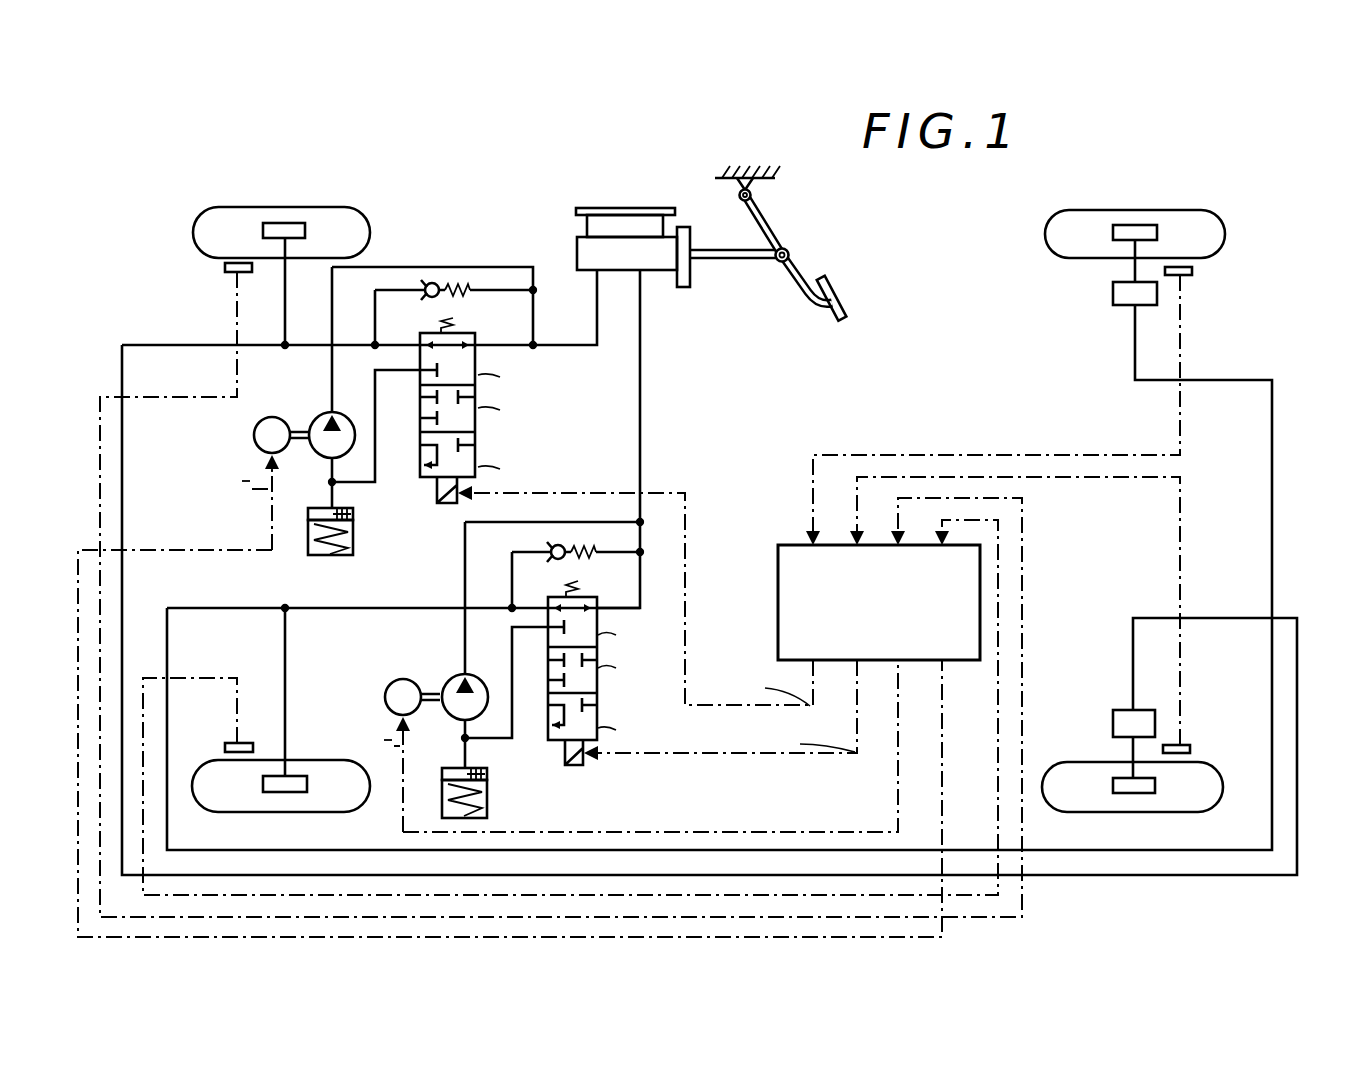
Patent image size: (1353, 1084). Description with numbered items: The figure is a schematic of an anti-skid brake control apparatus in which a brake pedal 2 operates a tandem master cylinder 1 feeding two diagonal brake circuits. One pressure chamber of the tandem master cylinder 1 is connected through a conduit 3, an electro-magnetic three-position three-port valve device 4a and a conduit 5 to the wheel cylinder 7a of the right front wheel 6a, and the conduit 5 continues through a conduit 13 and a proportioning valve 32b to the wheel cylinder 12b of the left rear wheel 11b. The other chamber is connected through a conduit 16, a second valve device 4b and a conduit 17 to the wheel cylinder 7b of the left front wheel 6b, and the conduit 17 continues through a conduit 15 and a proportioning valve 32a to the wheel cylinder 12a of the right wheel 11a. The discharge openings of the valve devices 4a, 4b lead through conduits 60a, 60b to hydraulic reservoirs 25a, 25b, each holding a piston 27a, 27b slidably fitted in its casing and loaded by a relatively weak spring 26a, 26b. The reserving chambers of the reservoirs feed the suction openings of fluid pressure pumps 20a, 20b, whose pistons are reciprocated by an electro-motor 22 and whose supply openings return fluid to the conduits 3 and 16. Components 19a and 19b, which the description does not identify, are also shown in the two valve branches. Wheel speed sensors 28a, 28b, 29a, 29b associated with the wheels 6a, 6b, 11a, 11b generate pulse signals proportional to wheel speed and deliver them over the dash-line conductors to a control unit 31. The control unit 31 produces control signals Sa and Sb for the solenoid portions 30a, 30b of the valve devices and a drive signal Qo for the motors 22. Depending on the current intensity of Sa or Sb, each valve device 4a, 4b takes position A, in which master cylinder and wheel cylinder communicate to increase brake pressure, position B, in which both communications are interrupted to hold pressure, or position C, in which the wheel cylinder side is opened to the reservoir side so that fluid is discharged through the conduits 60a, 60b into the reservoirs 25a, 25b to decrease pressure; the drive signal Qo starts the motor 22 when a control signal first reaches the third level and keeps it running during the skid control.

The tandem master cylinder 1 is at (590, 202).
The brake pedal 2 is at (828, 292).
The conduit 3 is at (563, 350).
The electro-magnetic three position three-port valve device 4a is at (480, 432).
The electro-magnetic three position three-port valve device 4b is at (602, 690).
The conduit 5 is at (285, 298).
The right front wheel 6a is at (348, 208).
The left front wheel 6b is at (334, 815).
The wheel cylinder 7a is at (286, 228).
The wheel cylinder 7b is at (288, 794).
The right wheel 11a is at (1195, 210).
The left rear wheel 11b is at (1188, 815).
The wheel cylinder 12a is at (1134, 226).
The wheel cylinder 12b is at (1134, 794).
The conduit 13 is at (1297, 778).
The conduit 15 is at (1273, 503).
The conduit 16 is at (642, 384).
The conduit 17 is at (383, 608).
The relief check valve (first circuit) 19a is at (452, 300).
The relief check valve (second circuit) 19b is at (545, 552).
The fluid pressure pump 20a is at (318, 420).
The fluid pressure pump 20b is at (452, 680).
The electro-motor 22 is at (254, 432).
The hydraulic reservoir 25a is at (353, 541).
The hydraulic reservoir 25b is at (487, 812).
The relatively weak spring 26a is at (350, 556).
The relatively weak spring 26b is at (487, 790).
The piston 27a is at (353, 516).
The piston 27b is at (448, 776).
The wheel speed sensor 28a is at (230, 270).
The wheel speed sensor 28b is at (230, 746).
The wheel speed sensor 29a is at (1192, 272).
The wheel speed sensor 29b is at (1190, 749).
The solenoid portion 30a is at (455, 502).
The solenoid portion 30b is at (576, 766).
The control unit 31 is at (782, 543).
The proportioning valve 32a is at (1113, 294).
The proportioning valve 32b is at (1113, 722).
The conduit 60a is at (378, 450).
The conduit 60b is at (514, 700).